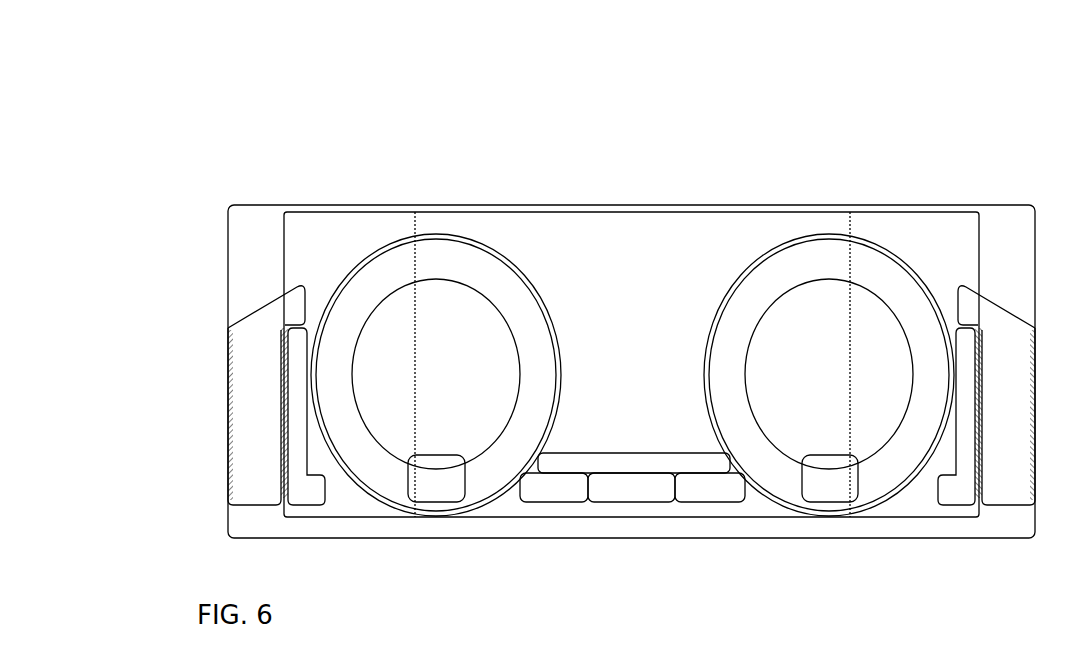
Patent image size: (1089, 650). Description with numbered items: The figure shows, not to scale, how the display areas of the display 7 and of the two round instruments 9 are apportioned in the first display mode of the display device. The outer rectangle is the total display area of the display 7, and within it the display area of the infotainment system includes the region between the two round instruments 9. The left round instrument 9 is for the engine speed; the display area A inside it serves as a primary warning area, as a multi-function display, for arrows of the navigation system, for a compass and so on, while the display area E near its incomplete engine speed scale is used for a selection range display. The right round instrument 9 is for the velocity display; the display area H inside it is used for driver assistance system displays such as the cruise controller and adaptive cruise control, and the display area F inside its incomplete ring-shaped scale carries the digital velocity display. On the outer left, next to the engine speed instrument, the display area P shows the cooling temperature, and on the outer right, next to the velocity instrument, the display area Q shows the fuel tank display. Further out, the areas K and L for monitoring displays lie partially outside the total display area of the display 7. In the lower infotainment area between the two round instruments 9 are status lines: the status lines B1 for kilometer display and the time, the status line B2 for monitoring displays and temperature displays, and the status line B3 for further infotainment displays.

The display 7 is at (698, 205).
The round instrument 9 is at (440, 240).
The area for monitoring displays K is at (266, 395).
The area for monitoring displays L is at (996, 395).
The display area for cooling temperature P is at (303, 416).
The display area for fuel tank display Q is at (960, 416).
The display area inside engine speed round instrument A is at (436, 374).
The display area inside velocity round instrument H is at (829, 374).
The display area for selection range display E is at (436, 478).
The display area for digital velocity display F is at (830, 478).
The status line B1 is at (632, 487).
The status line B2 is at (631, 487).
The status line B3 is at (634, 463).